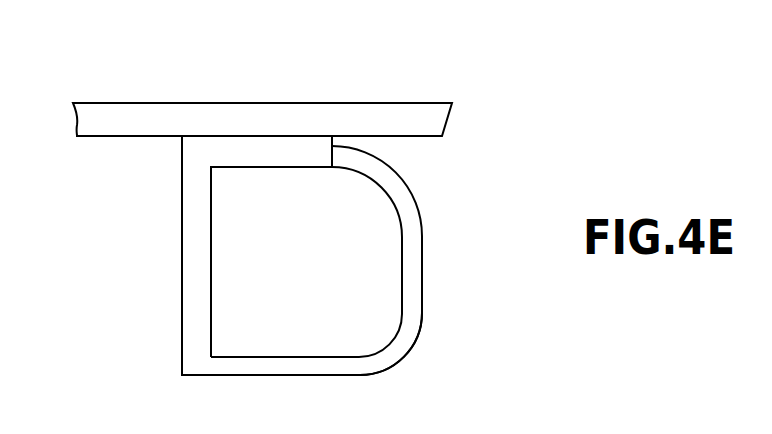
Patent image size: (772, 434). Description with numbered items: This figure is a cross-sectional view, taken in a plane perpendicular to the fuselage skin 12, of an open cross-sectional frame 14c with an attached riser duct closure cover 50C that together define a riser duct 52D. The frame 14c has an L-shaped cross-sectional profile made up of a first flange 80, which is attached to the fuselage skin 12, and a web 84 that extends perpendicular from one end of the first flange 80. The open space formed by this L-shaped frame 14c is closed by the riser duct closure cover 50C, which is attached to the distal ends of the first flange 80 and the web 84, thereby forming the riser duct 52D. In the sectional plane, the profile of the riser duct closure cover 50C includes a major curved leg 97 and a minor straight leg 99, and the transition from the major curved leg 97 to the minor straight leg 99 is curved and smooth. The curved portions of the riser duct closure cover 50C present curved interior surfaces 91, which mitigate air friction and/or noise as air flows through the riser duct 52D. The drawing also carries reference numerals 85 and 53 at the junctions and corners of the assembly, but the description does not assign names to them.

The fuselage skin 12 is at (167, 101).
The open cross-sectional frame 14c is at (166, 192).
The riser duct closure cover 50C is at (442, 229).
The riser duct 52D is at (140, 305).
The first flange 80 is at (290, 150).
The bend 85 is at (317, 152).
The inner corner 53 is at (212, 170).
The web 84 is at (212, 266).
The curved interior surfaces 91 is at (380, 346).
The minor straight leg 99 is at (253, 377).
The major curved leg 97 is at (397, 357).